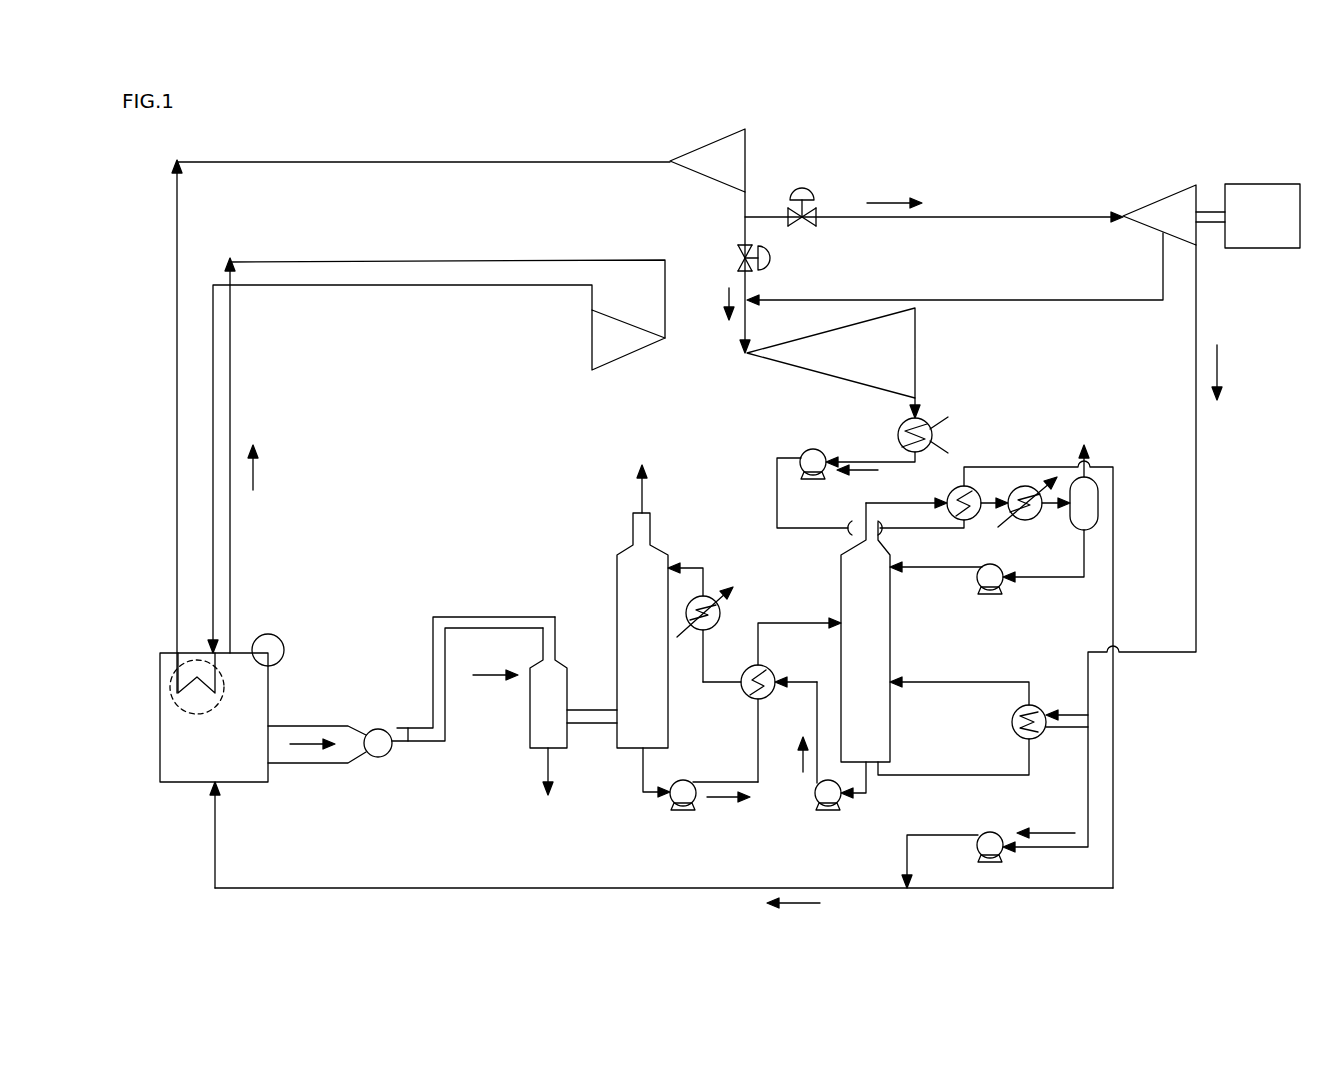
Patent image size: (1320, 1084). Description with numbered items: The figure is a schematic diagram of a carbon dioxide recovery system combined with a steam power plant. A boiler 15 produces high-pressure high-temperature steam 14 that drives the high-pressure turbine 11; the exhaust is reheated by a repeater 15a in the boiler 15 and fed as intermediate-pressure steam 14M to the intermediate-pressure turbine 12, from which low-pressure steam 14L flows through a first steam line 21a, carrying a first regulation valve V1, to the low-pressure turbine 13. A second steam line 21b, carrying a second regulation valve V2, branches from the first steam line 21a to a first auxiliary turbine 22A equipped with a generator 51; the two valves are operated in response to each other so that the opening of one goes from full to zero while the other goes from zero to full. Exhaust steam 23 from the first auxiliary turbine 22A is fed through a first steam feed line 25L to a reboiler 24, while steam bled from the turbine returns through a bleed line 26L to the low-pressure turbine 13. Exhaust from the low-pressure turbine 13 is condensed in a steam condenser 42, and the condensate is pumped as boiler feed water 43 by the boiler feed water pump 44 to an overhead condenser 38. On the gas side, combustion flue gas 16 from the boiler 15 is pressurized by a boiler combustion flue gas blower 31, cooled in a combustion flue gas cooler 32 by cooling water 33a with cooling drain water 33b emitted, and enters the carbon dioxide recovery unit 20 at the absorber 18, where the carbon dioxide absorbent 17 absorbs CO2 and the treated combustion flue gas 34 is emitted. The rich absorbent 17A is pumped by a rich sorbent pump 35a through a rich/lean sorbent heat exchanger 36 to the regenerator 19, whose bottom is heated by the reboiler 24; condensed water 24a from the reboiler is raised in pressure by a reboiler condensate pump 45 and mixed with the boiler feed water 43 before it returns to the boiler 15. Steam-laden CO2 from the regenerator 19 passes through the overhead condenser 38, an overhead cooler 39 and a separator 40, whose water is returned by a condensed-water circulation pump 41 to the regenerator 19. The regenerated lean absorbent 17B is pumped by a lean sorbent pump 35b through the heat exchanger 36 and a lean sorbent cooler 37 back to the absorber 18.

The high-pressure turbine 11 is at (592, 340).
The intermediate-pressure turbine 12 is at (718, 147).
The low-pressure turbine 13 is at (915, 340).
The steam 14 is at (258, 472).
The intermediate-pressure steam 14M is at (448, 147).
The low-pressure steam 14L is at (890, 200).
The boiler 15 is at (270, 683).
The repeater 15a is at (172, 685).
The combustion flue gas 16 is at (308, 750).
The carbon dioxide absorbent 17 is at (817, 846).
The carbon dioxide absorbent having absorbed carbon dioxide 17A is at (724, 800).
The regenerated carbon dioxide absorbent 17B is at (798, 760).
The carbon dioxide absorber 18 is at (617, 576).
The carbon dioxide regenerator 19 is at (840, 580).
The carbon dioxide recovery unit 20 is at (716, 495).
The first steam line 21a is at (740, 205).
The second steam line 21b is at (1013, 215).
The first auxiliary turbine 22A is at (1162, 197).
The exhaust steam 23 is at (1220, 380).
The reboiler 24 is at (1042, 705).
The condensed water 24a is at (1057, 832).
The first steam feed line 25L is at (1200, 465).
The bleed line 26L is at (1110, 302).
The boiler combustion flue gas blower 31 is at (382, 758).
The combustion flue gas cooler 32 is at (530, 738).
The cooling water 33a is at (492, 678).
The cooling drain water 33b is at (546, 764).
The combustion flue gas with CO2 reduced 34 is at (640, 492).
The rich sorbent pump 35a is at (681, 781).
The lean sorbent pump 35b is at (826, 810).
The rich/lean sorbent heat exchanger 36 is at (771, 670).
The lean sorbent cooler 37 is at (722, 610).
The overhead condenser 38 is at (988, 488).
The overhead cooler 39 is at (1030, 523).
The separator 40 is at (1100, 495).
The condensed-water circulation pump 41 is at (976, 580).
The steam condenser 42 is at (938, 425).
The boiler feed water 43 is at (866, 472).
The boiler feed water pump 44 is at (814, 449).
The reboiler condensate pump 45 is at (976, 849).
The generator 51 is at (1266, 160).
The first regulation valve V1 is at (775, 258).
The second regulation valve V2 is at (801, 186).